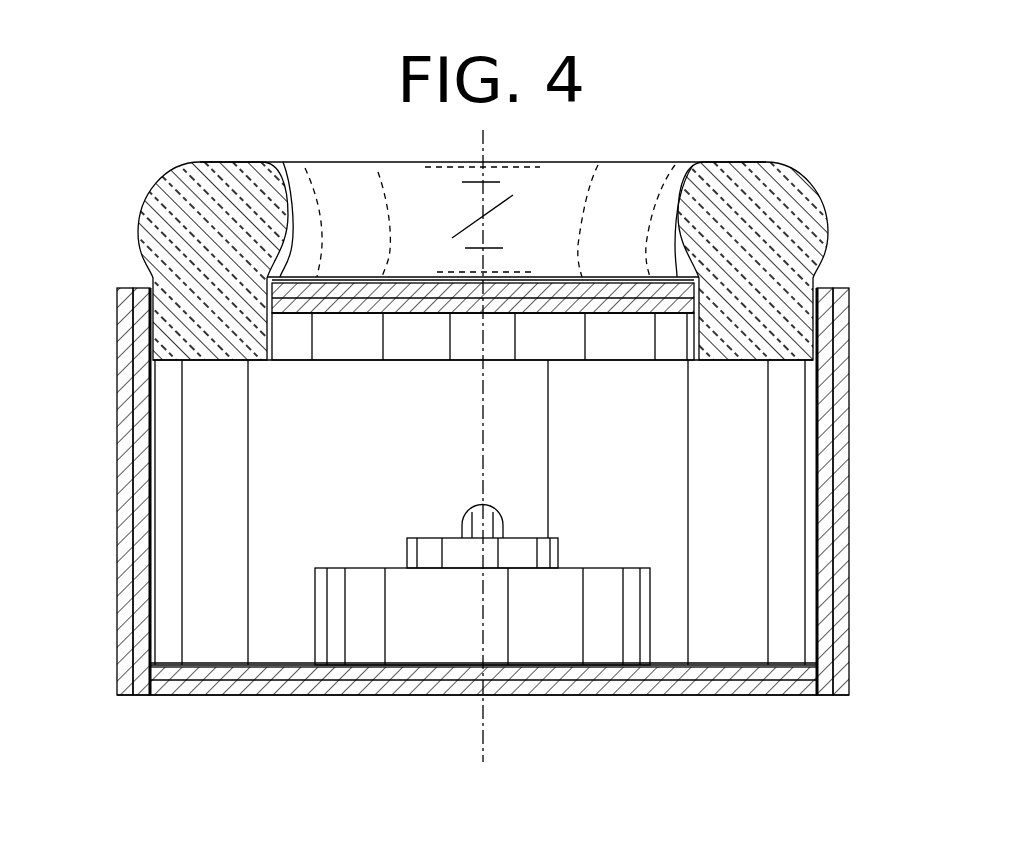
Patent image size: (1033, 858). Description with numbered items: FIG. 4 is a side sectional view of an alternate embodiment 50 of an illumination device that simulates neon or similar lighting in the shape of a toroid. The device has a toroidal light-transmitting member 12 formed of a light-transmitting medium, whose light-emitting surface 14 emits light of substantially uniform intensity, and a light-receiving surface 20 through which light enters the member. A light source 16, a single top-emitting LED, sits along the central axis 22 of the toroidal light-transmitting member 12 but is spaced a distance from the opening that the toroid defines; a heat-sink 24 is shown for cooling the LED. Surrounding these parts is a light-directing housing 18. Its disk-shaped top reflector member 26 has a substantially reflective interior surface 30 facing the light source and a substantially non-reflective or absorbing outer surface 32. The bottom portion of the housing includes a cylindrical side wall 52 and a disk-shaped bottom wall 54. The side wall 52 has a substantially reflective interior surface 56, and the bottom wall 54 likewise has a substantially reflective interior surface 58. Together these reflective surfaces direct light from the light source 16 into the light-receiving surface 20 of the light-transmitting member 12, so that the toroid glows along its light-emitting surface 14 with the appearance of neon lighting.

The alternate embodiment 50 is at (90, 171).
The light-transmitting member 12 is at (812, 236).
The light-emitting surface 14 is at (787, 167).
The light-directing housing 18 is at (532, 277).
The top reflector member 26 is at (627, 277).
The reflective interior surface 30 is at (350, 322).
The outer surface 32 is at (407, 277).
The light-receiving surface 20 is at (775, 362).
The side wall 52 is at (850, 472).
The reflective interior surface 56 is at (814, 600).
The bottom wall 54 is at (795, 690).
The reflective interior surface 58 is at (205, 663).
The heat-sink 24 is at (595, 642).
The light source 16 is at (470, 523).
The central axis 22 is at (483, 727).